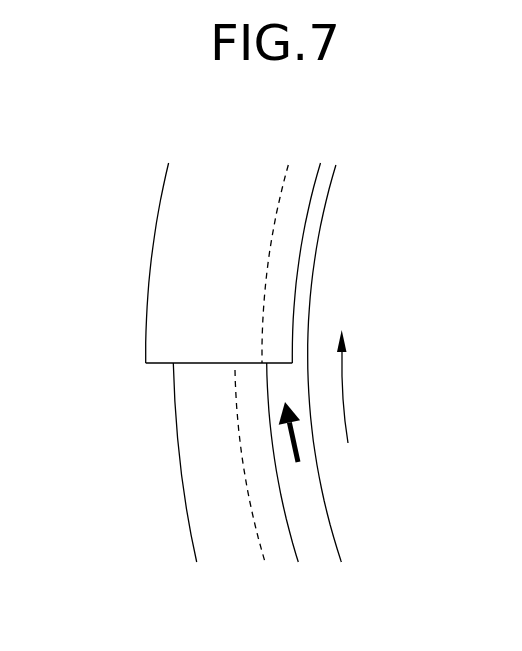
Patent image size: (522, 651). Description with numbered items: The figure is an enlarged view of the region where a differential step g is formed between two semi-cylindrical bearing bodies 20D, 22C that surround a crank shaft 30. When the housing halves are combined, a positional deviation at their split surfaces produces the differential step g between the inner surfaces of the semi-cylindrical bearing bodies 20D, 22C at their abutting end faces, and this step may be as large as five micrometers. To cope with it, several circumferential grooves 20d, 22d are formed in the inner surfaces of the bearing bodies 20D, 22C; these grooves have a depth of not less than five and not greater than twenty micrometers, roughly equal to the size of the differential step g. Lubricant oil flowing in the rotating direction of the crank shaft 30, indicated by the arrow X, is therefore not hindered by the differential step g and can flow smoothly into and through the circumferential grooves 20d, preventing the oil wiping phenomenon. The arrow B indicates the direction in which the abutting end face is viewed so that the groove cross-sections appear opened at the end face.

The semi-cylindrical bearing body 20D is at (155, 317).
The circumferential grooves 20d is at (276, 224).
The crank shaft 30 is at (355, 245).
The semi-cylindrical bearing body 22C is at (200, 500).
The circumferential grooves 22d is at (247, 415).
The differential step g is at (280, 363).
The rotating direction of the crankshaft X is at (357, 386).
The viewing direction arrow B is at (298, 453).